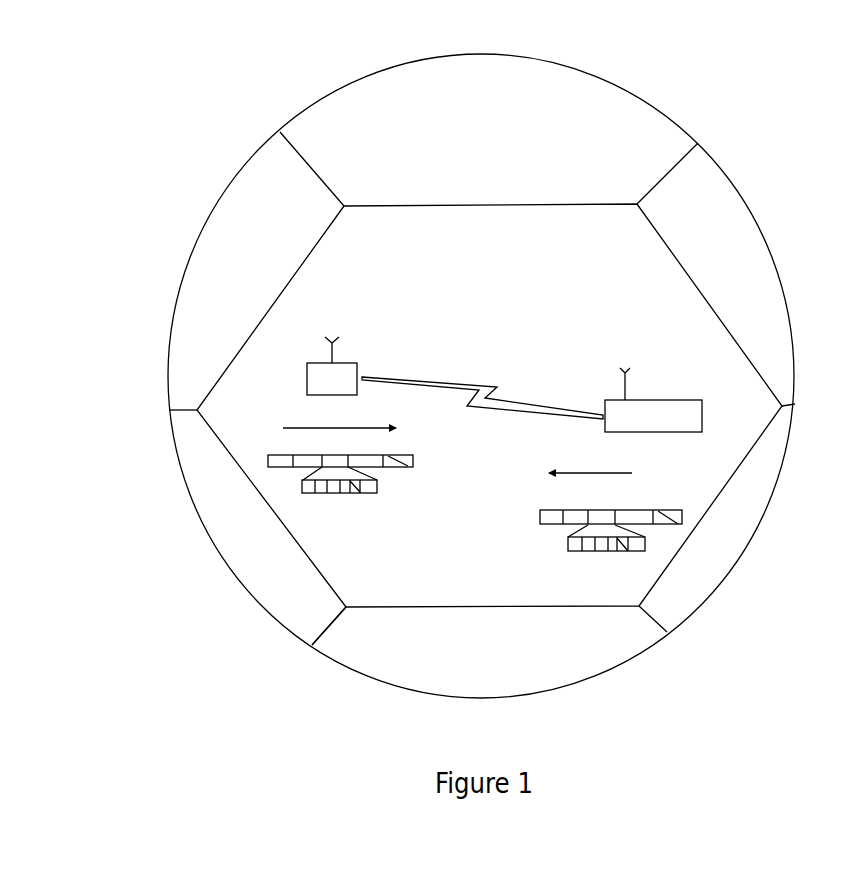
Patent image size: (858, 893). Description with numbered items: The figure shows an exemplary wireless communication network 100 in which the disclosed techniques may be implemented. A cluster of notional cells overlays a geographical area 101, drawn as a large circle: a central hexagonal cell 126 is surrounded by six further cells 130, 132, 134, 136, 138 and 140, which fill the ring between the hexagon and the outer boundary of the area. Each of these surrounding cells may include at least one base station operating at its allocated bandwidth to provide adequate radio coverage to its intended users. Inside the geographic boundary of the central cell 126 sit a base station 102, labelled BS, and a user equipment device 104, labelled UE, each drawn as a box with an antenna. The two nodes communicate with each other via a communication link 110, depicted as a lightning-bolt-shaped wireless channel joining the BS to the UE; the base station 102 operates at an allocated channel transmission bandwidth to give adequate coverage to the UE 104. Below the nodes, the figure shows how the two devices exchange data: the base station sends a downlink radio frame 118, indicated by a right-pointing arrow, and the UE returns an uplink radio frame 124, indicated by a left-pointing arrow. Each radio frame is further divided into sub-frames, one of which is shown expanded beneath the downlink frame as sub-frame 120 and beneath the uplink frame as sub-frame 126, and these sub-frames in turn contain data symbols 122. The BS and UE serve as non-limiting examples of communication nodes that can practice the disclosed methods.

The wireless communication network 100 is at (437, 26).
The geographical area 101 is at (603, 72).
The base station 102 is at (307, 373).
The user equipment device 104 is at (670, 400).
The communication link 110 is at (480, 378).
The downlink radio frame 118 is at (270, 460).
The sub-frame 120 is at (302, 485).
The data symbol 122 is at (506, 514).
The uplink radio frame 124 is at (657, 507).
The cell 126 is at (373, 250).
The cell 130 is at (243, 180).
The cell 132 is at (357, 97).
The cell 134 is at (718, 198).
The cell 136 is at (693, 590).
The cell 138 is at (388, 658).
The cell 140 is at (248, 568).